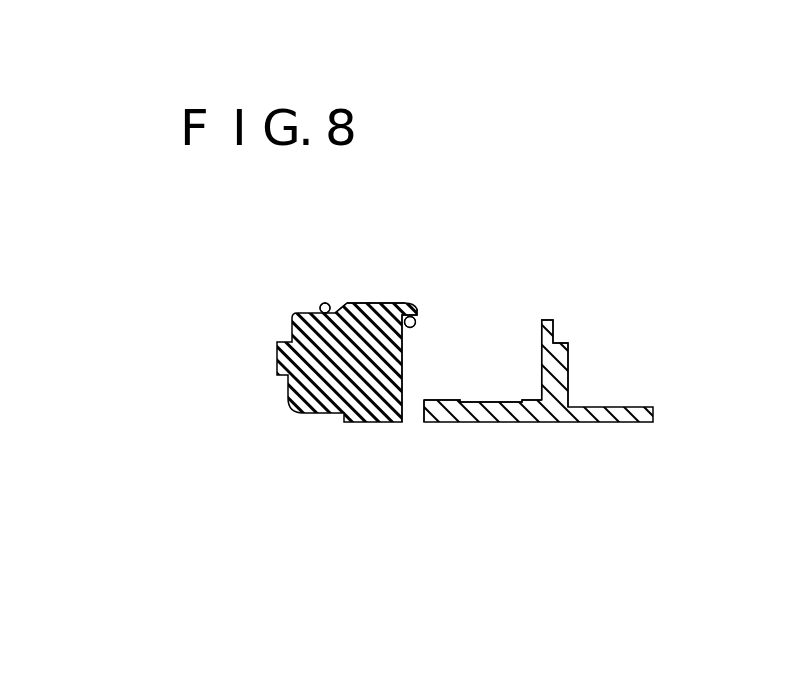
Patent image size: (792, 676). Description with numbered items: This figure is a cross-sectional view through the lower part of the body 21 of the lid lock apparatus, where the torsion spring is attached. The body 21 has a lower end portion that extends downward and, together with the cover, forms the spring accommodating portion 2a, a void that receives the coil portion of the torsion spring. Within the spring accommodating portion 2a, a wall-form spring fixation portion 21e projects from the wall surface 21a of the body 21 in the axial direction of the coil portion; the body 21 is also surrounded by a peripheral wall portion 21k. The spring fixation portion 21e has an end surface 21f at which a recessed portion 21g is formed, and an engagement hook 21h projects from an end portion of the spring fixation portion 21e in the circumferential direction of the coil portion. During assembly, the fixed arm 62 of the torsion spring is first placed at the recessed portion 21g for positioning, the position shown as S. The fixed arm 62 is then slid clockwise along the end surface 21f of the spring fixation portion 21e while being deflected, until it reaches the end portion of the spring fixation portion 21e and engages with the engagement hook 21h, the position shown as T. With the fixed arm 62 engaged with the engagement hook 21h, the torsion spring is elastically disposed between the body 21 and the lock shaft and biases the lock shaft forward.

The fixed arm positioned at recessed portion S is at (322, 303).
The fixed arm engaged with engagement hook T is at (417, 321).
The fixed arm 62 is at (408, 328).
The spring fixation portion 21e is at (315, 408).
The end surface 21f is at (380, 303).
The recessed portion 21g is at (330, 308).
The engagement hook 21h is at (412, 317).
The wall surface 21a is at (488, 400).
The peripheral wall portion 21k is at (553, 335).
The spring accommodating portion 2a is at (465, 388).
The body 21 is at (555, 418).